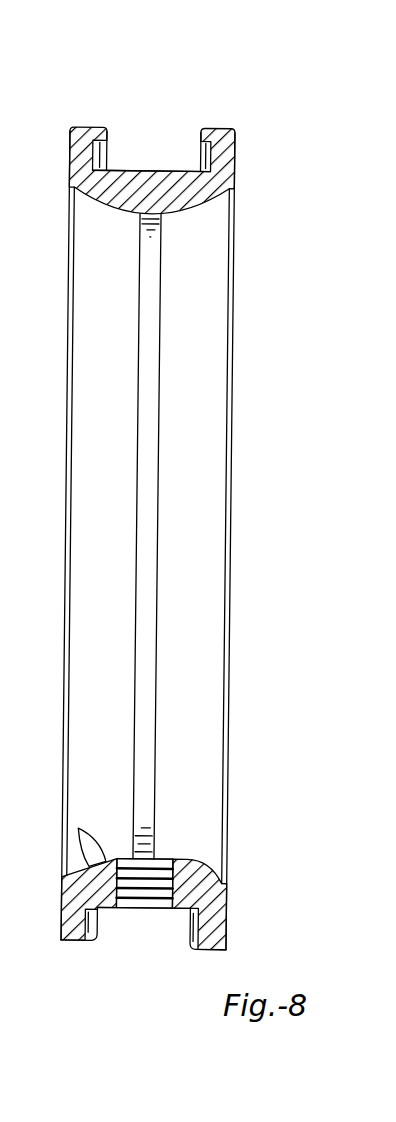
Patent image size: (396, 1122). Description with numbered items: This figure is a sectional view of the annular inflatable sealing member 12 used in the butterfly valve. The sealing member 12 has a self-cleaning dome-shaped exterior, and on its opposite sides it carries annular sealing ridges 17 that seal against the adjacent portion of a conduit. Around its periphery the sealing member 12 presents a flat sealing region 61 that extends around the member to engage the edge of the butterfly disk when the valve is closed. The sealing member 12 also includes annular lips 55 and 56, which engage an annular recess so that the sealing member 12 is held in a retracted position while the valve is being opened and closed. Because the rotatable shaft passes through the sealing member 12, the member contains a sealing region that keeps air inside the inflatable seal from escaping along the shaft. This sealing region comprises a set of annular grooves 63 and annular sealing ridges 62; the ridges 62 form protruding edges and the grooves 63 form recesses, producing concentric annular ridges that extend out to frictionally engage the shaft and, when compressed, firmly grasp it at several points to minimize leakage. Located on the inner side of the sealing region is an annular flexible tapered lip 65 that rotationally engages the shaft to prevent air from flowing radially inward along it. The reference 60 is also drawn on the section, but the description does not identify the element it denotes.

The annular inflatable sealing member 12 is at (211, 864).
The annular sealing ridges 17 is at (236, 139).
The annular lip 55 is at (107, 128).
The annular lip 56 is at (201, 131).
The shoulder 60 is at (136, 857).
The flat sealing region 61 is at (163, 810).
The annular sealing ridges 62 is at (166, 857).
The annular grooves 63 is at (89, 835).
The annular flexible tapered lip 65 is at (141, 909).